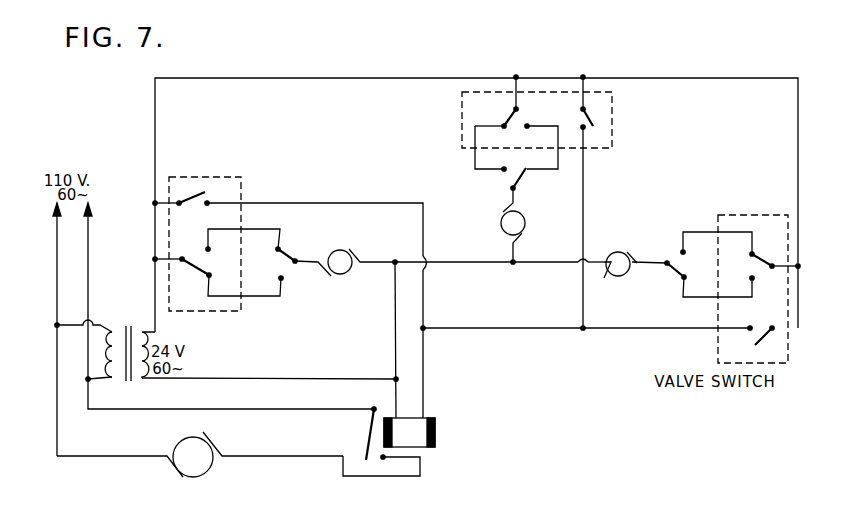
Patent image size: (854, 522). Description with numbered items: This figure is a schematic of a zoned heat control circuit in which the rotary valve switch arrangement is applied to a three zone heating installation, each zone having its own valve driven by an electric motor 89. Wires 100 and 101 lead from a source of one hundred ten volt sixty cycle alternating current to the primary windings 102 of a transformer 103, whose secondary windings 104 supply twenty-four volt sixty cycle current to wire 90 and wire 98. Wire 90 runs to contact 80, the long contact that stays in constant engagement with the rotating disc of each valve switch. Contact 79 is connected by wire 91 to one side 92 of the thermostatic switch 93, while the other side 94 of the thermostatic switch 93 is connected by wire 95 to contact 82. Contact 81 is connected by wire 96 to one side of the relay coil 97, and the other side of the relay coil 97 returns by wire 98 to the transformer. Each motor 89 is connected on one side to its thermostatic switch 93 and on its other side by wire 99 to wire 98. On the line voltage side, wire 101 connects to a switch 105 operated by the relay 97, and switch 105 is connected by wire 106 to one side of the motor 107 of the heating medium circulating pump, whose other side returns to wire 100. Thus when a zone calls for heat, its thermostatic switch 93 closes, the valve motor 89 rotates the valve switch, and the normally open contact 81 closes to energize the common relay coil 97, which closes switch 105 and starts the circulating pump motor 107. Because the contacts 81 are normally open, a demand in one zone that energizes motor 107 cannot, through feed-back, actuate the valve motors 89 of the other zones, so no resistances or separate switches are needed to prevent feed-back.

The contact 79 is at (207, 277).
The contact 80 is at (188, 195).
The contact 81 is at (211, 198).
The contact 82 is at (206, 249).
The electric motor 89 is at (336, 249).
The wire 90 is at (156, 116).
The wire 91 is at (262, 296).
The side of thermostatic switch 92 is at (283, 279).
The thermostatic switch 93 is at (280, 251).
The side of thermostatic switch 94 is at (286, 254).
The wire 95 is at (260, 229).
The wire 96 is at (379, 203).
The relay coil 97 is at (437, 418).
The wire 98 is at (395, 308).
The wire 99 is at (374, 258).
The wire 100 is at (57, 247).
The wire 101 is at (89, 247).
The primary windings 102 is at (108, 321).
The transformer 103 is at (118, 380).
The secondary windings 104 is at (150, 337).
The switch 105 is at (368, 438).
The wire 106 is at (368, 477).
The motor 107 is at (176, 446).